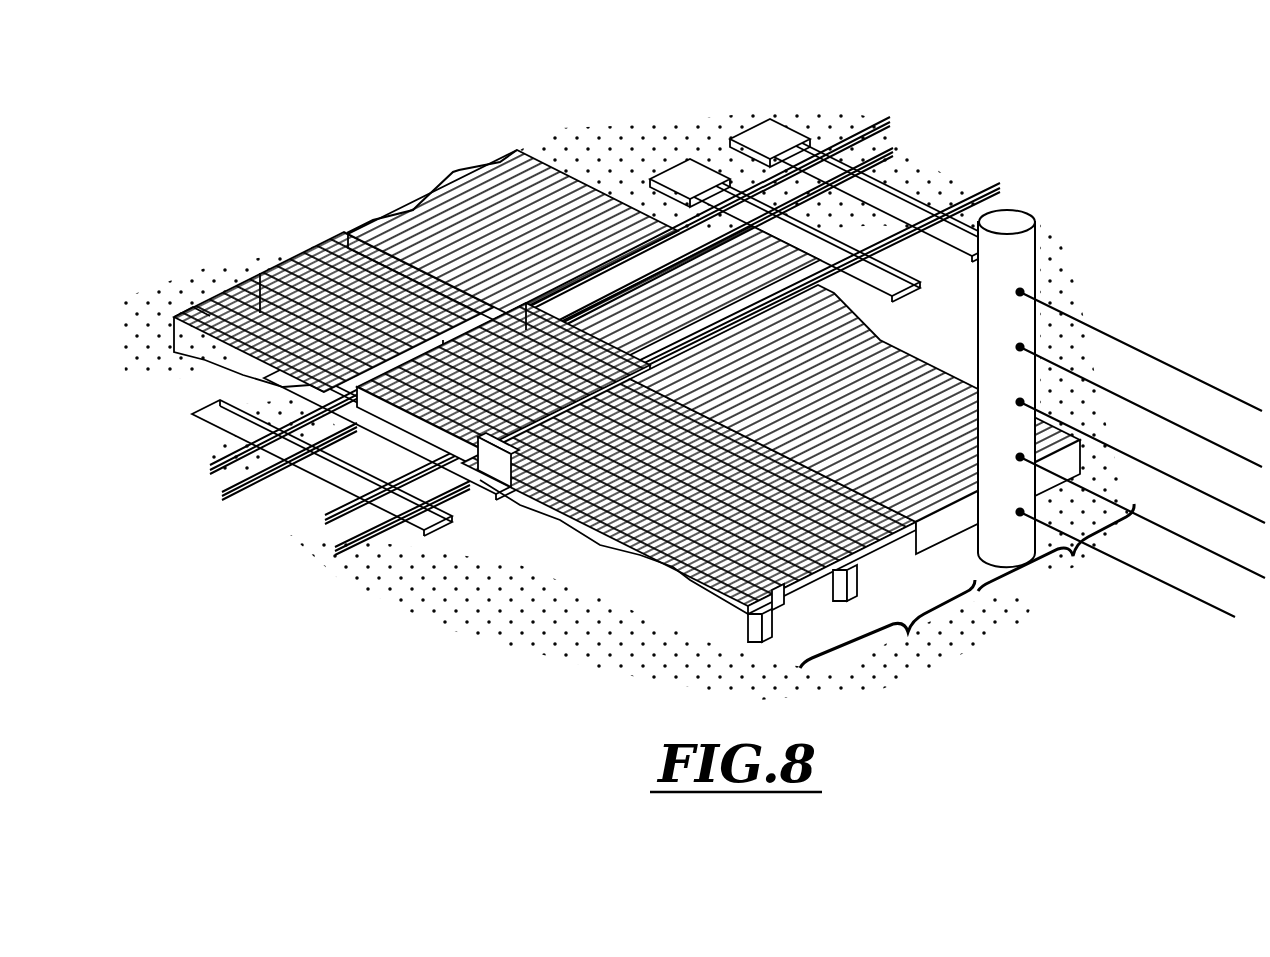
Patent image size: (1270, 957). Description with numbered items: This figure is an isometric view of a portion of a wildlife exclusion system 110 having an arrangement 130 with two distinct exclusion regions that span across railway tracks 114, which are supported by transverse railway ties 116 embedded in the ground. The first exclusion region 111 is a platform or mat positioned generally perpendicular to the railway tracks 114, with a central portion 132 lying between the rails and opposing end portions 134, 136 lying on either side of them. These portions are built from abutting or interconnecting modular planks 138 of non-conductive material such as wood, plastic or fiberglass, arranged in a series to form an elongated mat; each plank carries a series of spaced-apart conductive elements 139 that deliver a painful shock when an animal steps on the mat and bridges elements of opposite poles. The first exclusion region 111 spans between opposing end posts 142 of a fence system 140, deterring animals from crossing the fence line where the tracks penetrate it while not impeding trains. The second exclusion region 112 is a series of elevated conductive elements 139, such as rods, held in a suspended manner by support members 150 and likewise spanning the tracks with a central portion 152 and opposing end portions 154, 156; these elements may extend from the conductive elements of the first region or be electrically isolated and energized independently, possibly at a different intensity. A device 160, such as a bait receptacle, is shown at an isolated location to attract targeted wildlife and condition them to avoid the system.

The wildlife exclusion system 110 is at (586, 291).
The first exclusion region 111 is at (1056, 548).
The second exclusion region 112 is at (887, 624).
The railway tracks 114 is at (867, 120).
The railway ties 116 is at (712, 178).
The arrangement 130 is at (718, 372).
The central portion 132 is at (830, 240).
The end portion 134 is at (635, 162).
The end portion 136 is at (960, 363).
The modular planks 138 is at (560, 180).
The conductive elements 139 is at (908, 372).
The fence system 140 is at (1112, 413).
The end posts 142 is at (1033, 266).
The support members 150 is at (723, 612).
The central portion 152 is at (275, 485).
The end portion 154 is at (190, 392).
The end portion 156 is at (515, 580).
The device 160 is at (780, 612).